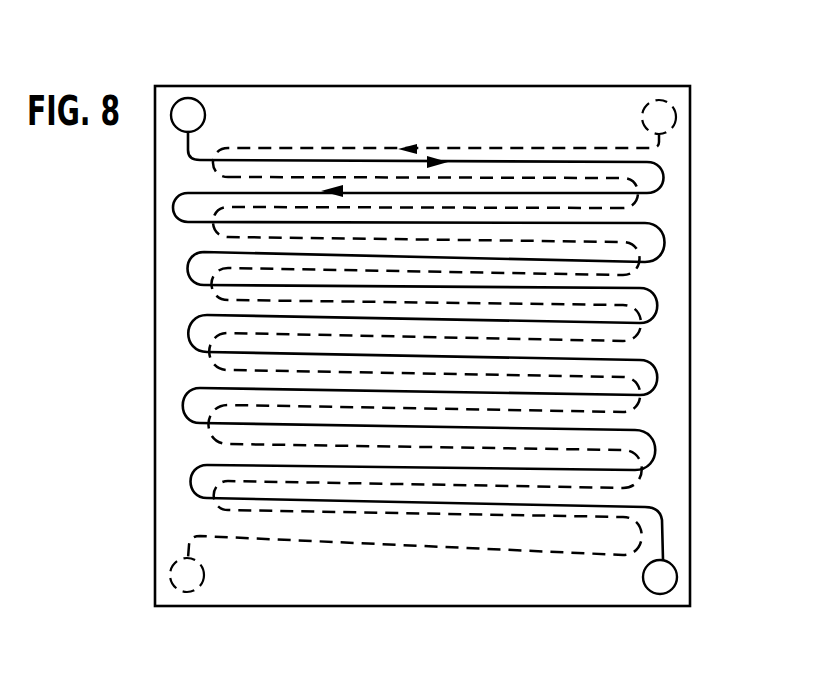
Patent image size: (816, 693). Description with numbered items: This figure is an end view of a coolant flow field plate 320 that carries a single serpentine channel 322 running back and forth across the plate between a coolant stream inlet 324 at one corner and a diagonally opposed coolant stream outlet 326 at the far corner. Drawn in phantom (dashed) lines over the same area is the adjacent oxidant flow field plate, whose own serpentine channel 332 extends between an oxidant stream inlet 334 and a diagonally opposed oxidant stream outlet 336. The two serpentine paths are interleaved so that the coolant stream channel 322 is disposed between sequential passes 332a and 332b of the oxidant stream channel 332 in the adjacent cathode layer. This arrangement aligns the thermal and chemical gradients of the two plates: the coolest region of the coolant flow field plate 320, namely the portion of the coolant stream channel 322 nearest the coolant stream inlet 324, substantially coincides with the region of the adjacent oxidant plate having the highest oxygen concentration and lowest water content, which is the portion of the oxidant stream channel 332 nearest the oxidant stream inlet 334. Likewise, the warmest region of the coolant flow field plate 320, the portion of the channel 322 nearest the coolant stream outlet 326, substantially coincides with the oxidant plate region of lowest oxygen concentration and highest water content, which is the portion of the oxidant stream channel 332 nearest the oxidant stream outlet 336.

The coolant flow field plate 320 is at (489, 616).
The serpentine channel 322 is at (525, 162).
The coolant stream inlet 324 is at (199, 105).
The coolant stream outlet 326 is at (650, 589).
The serpentine channel 332 is at (465, 295).
The sequential pass 332a is at (332, 148).
The sequential pass 332b is at (375, 178).
The oxidant stream inlet 334 is at (665, 102).
The oxidant stream outlet 336 is at (198, 586).